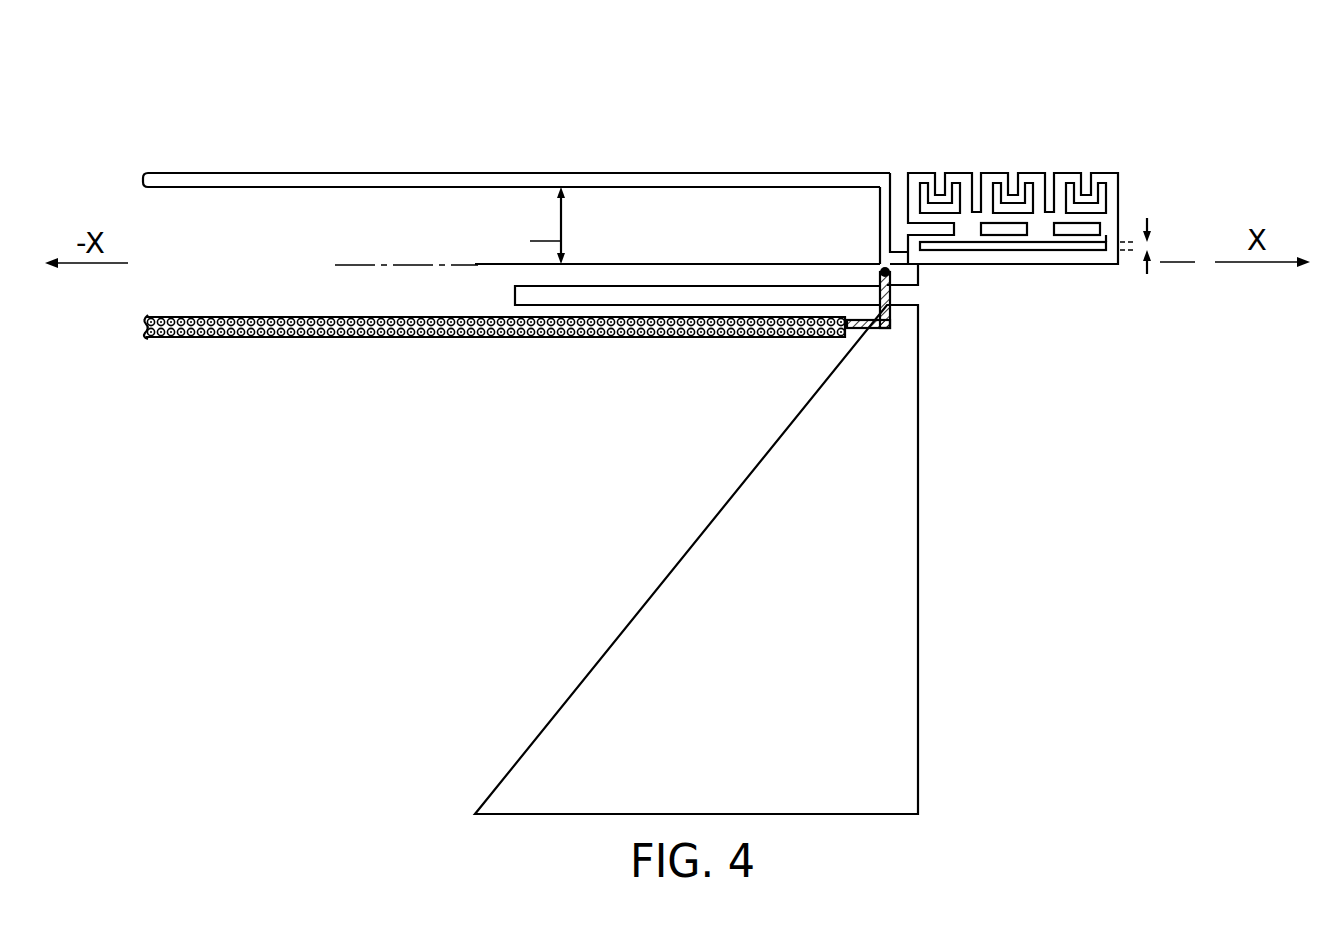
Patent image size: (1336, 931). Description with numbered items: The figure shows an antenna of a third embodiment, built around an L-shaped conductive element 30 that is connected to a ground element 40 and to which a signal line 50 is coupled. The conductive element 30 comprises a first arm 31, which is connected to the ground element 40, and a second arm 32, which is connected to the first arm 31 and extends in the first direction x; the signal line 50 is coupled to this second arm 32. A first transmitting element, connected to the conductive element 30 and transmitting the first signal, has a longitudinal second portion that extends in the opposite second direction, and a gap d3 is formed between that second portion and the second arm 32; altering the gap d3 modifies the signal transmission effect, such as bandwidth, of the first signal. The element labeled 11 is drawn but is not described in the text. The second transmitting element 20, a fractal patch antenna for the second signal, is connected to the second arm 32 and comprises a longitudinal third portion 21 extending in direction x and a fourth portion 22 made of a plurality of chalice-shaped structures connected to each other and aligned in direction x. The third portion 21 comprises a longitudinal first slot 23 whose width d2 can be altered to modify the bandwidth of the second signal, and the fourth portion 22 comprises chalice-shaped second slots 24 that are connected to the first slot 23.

The connecting arm 11 is at (887, 172).
The second transmitting element 20 is at (1045, 96).
The third portion 21 is at (979, 240).
The fourth portion 22 is at (1068, 176).
The first slot 23 is at (1088, 253).
The second slots 24 is at (1112, 182).
The conductive element 30 is at (373, 372).
The first arm 31 is at (497, 296).
The second arm 32 is at (587, 272).
The ground element 40 is at (919, 557).
The signal line 50 is at (893, 293).
The width of the first slot d2 is at (1157, 246).
The gap d3 is at (547, 225).